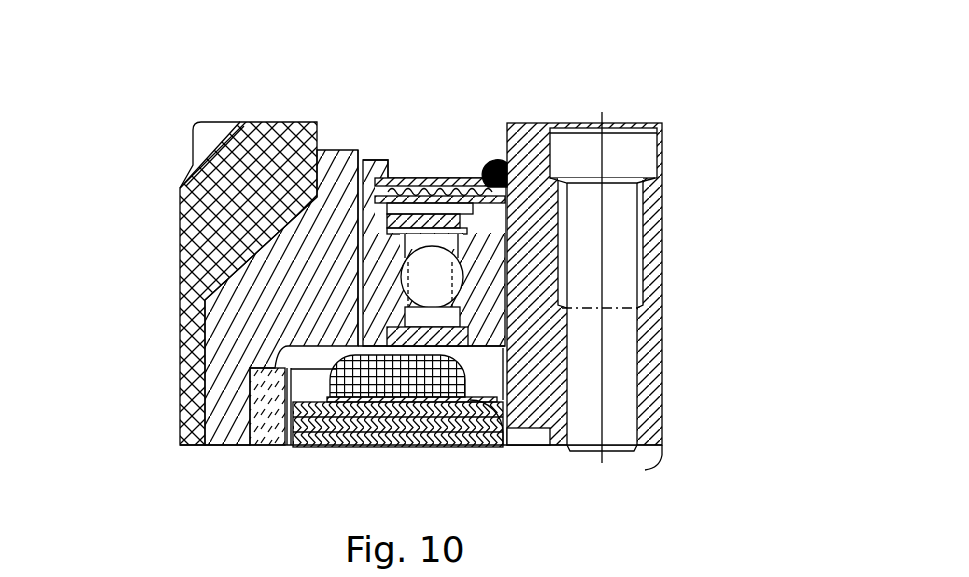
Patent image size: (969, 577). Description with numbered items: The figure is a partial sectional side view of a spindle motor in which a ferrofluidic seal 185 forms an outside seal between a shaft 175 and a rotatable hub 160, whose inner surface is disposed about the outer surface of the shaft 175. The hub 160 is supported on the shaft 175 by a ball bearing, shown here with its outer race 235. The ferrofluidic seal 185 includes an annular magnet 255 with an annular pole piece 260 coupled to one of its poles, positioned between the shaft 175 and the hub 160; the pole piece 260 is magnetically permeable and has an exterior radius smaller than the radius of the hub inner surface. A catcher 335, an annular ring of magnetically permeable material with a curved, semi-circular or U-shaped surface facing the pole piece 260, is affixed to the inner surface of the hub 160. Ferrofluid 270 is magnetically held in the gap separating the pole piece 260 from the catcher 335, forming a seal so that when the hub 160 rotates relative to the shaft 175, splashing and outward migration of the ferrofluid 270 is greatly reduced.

The rotatable hub 160 is at (277, 297).
The shaft 175 is at (530, 125).
The ferrofluidic seal 185 is at (422, 122).
The outer race 235 is at (393, 287).
The annular magnet 255 is at (468, 152).
The annular pole piece 260 is at (416, 178).
The ferrofluid 270 is at (377, 162).
The catcher 335 is at (360, 151).